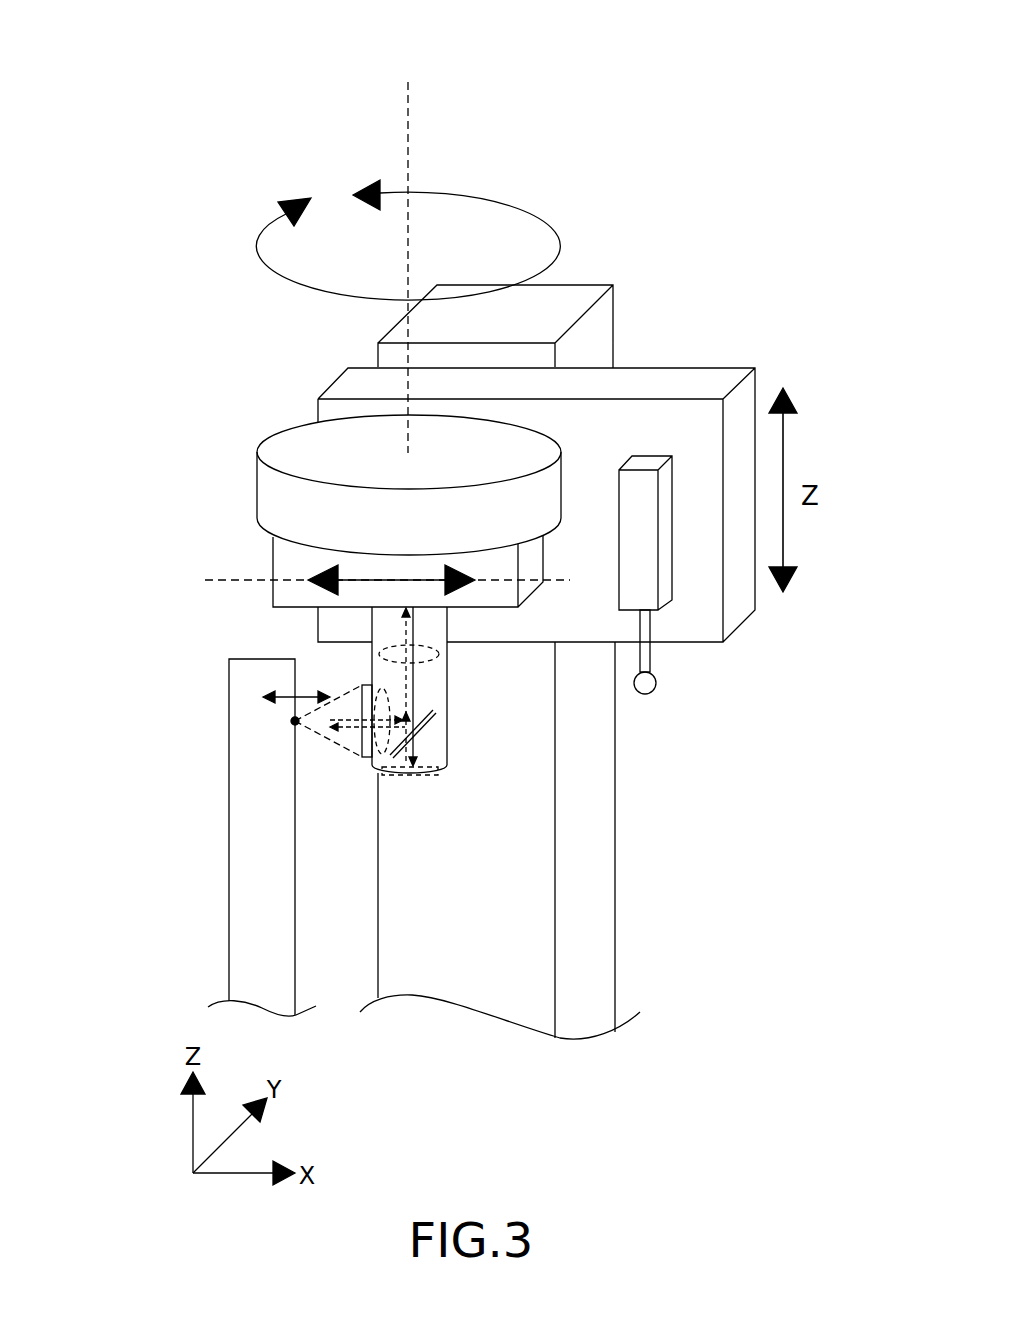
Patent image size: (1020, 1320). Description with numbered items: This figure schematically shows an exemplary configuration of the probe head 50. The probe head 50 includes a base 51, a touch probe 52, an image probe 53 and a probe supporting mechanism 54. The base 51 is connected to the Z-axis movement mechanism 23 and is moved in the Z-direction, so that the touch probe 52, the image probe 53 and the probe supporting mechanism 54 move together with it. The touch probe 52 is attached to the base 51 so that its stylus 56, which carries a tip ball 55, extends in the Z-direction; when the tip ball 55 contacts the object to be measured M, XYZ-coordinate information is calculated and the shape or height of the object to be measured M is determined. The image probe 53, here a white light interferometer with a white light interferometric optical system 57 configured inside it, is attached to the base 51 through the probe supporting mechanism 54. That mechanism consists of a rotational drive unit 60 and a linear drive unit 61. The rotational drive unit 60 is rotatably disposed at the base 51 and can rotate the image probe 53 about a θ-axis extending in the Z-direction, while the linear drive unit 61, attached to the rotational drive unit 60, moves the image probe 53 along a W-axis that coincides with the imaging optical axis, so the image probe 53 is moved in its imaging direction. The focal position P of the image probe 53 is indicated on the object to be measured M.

The Z-axis movement mechanism 23 is at (597, 900).
The probe head 50 is at (608, 178).
The base 51 is at (651, 382).
The touch probe 52 is at (665, 580).
The image probe 53 is at (376, 766).
The probe supporting mechanism 54 is at (228, 474).
The tip ball 55 is at (645, 694).
The stylus 56 is at (651, 651).
The white light interferometric optical system 57 is at (436, 733).
The rotational drive unit 60 is at (297, 443).
The linear drive unit 61 is at (273, 562).
The object to be measured M is at (247, 778).
The focal position P is at (298, 726).